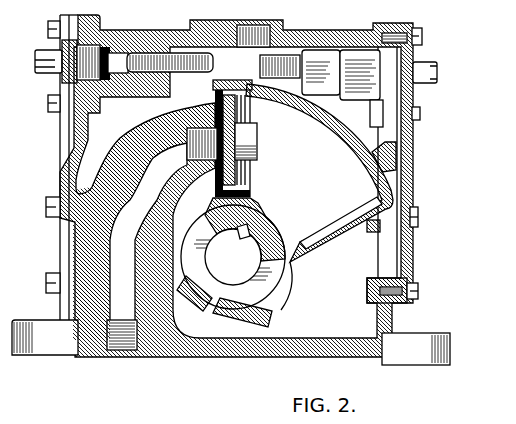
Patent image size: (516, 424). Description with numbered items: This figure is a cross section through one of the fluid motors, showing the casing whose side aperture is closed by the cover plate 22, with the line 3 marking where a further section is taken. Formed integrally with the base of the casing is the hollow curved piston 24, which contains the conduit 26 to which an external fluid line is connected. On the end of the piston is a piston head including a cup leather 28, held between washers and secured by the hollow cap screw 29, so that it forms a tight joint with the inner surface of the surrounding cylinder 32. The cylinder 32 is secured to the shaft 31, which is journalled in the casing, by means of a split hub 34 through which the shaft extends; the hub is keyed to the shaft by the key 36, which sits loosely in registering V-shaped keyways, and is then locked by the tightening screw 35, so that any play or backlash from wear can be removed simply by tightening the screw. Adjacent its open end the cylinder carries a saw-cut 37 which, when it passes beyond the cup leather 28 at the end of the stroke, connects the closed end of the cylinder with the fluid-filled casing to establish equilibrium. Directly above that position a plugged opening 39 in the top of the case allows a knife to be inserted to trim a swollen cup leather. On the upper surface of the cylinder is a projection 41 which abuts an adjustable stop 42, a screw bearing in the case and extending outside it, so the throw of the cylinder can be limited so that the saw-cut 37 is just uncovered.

The section line indicator 3 is at (124, 2).
The cover plate 22 is at (68, 134).
The curved piston 24 is at (139, 134).
The conduit 26 is at (113, 248).
The cup leather 28 is at (249, 195).
The hollow cap screw 29 is at (258, 131).
The shaft 31 is at (233, 254).
The cylinder 32 is at (390, 182).
The split hub 34 is at (268, 288).
The tightening screw 35 is at (260, 320).
The key 36 is at (268, 215).
The saw-cut 37 is at (252, 104).
The plugged opening 39 is at (263, 32).
The projection 41 is at (386, 154).
The adjustable stop 42 is at (146, 57).